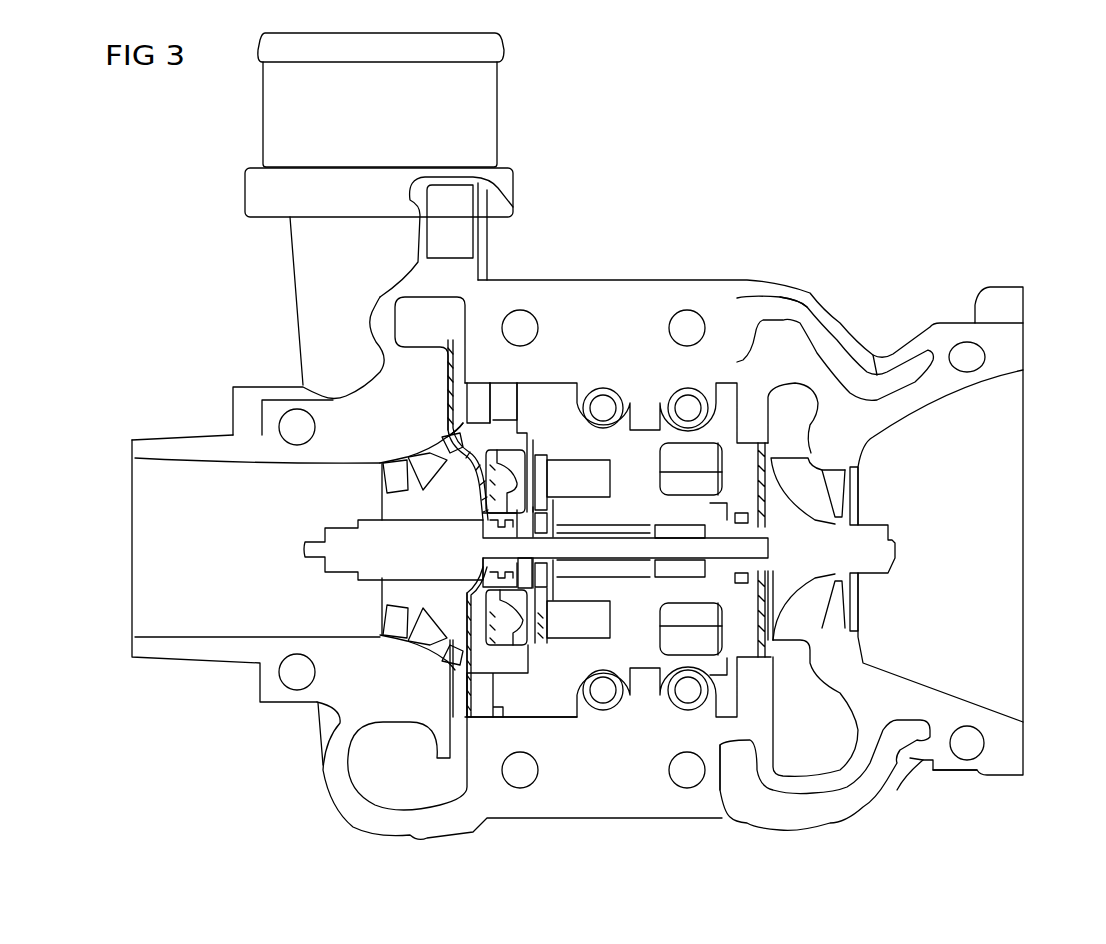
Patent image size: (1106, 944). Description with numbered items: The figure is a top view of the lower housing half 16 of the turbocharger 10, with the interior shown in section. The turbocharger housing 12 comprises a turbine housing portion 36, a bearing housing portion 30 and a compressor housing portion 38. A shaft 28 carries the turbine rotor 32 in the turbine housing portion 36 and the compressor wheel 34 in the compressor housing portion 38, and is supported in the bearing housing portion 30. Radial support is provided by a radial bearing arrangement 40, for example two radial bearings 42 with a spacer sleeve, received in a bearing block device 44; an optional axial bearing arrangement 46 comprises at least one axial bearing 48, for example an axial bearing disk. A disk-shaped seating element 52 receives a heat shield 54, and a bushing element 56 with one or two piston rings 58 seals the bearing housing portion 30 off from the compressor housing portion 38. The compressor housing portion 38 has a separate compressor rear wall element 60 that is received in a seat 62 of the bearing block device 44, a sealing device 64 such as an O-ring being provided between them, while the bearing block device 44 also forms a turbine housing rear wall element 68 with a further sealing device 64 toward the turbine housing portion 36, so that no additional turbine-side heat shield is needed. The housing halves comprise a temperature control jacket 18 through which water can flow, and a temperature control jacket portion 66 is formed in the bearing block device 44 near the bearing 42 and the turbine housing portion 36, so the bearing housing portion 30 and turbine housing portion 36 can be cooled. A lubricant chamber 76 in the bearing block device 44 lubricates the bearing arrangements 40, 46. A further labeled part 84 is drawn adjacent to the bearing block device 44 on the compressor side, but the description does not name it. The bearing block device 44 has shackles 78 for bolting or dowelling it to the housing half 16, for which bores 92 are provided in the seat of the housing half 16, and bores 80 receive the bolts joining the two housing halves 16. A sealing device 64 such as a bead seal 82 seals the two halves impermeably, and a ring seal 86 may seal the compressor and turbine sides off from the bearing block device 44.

The turbocharger 10 is at (700, 263).
The turbocharger housing 12 is at (936, 322).
The lower housing half 16 is at (1014, 289).
The temperature control jacket 18 is at (818, 325).
The shaft 28 is at (398, 583).
The bearing housing portion 30 is at (636, 278).
The turbine rotor 32 is at (857, 582).
The compressor wheel 34 is at (375, 520).
The turbine housing portion 36 is at (875, 355).
The compressor housing portion 38 is at (356, 830).
The radial bearing arrangement 40 is at (657, 510).
The radial bearing 42 is at (680, 542).
The bearing block device 44 is at (540, 712).
The axial bearing arrangement 46 is at (541, 610).
The axial bearing 48 is at (540, 455).
The seating element 52 is at (535, 556).
The heat shield 54 is at (486, 612).
The bushing element 56 is at (478, 536).
The piston ring 58 is at (480, 575).
The compressor rear wall element 60 is at (442, 437).
The seat 62 is at (517, 412).
The sealing device 64 is at (1024, 357).
The temperature control jacket portion 66 is at (762, 540).
The turbine housing rear wall element 68 is at (770, 647).
The lubricant chamber 76 is at (600, 620).
The shackle 78 is at (680, 715).
The bore 80 is at (965, 760).
The bead seal 82 is at (1010, 748).
The housing part 84 is at (503, 372).
The ring seal 86 is at (492, 700).
The bore 92 is at (692, 690).